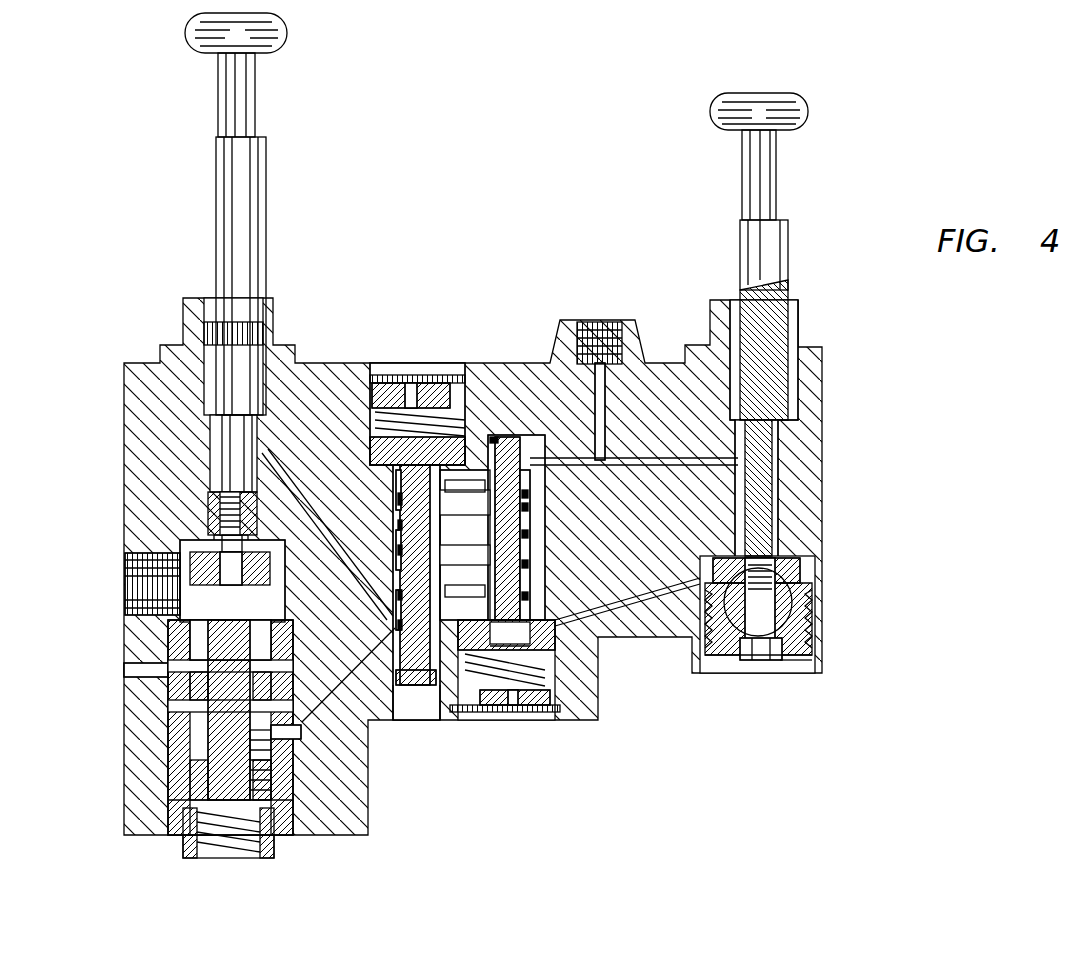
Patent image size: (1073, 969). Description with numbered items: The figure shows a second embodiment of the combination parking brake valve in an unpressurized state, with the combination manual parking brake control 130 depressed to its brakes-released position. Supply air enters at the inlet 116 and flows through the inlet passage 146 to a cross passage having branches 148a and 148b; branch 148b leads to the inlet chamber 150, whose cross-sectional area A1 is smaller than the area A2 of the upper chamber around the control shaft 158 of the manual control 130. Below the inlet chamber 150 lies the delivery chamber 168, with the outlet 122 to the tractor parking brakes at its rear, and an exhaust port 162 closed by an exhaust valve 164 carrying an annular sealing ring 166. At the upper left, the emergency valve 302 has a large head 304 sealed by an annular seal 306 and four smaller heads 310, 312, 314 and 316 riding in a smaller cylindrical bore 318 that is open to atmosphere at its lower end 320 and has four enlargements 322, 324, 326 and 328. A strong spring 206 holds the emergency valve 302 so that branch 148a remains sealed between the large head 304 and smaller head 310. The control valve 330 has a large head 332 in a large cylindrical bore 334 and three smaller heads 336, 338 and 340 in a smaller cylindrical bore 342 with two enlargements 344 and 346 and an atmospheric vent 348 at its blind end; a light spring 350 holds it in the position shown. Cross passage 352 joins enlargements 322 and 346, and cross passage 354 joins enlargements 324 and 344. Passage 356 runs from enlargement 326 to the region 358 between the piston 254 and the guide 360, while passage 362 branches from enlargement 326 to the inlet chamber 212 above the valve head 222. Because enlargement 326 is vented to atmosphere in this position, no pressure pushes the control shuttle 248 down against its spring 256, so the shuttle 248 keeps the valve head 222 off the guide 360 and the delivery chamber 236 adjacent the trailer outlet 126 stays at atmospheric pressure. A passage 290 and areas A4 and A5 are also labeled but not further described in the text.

The inlet 116 is at (600, 325).
The outlet 122 is at (770, 592).
The outlet 126 is at (124, 562).
The combination manual parking brake control 130 is at (812, 325).
The inlet passage 146 is at (607, 388).
The branch 148a is at (645, 465).
The branch 148b is at (650, 458).
The inlet chamber 150 is at (780, 500).
The control shaft 158 is at (776, 300).
The exhaust port 162 is at (790, 665).
The exhaust valve 164 is at (748, 665).
The annular sealing ring 166 is at (795, 660).
The delivery chamber 168 is at (795, 565).
The strong spring 206 is at (370, 403).
The inlet chamber 212 is at (214, 440).
The valve head 222 is at (205, 538).
The delivery chamber 236 is at (252, 611).
The control shuttle 248 is at (250, 754).
The piston 254 is at (275, 745).
The spring 256 is at (182, 855).
The passage 290 is at (645, 590).
The emergency valve 302 is at (330, 466).
The large head 304 is at (443, 462).
The annular seal 306 is at (462, 436).
The smaller head 310 is at (400, 480).
The smaller head 312 is at (397, 550).
The smaller head 314 is at (397, 600).
The smaller head 316 is at (397, 680).
The smaller cylindrical bore 318 is at (397, 525).
The lower end 320 is at (412, 722).
The enlargement 322 is at (397, 500).
The enlargement 324 is at (465, 545).
The enlargement 326 is at (397, 628).
The enlargement 328 is at (440, 722).
The control valve 330 is at (570, 630).
The large head 332 is at (528, 643).
The large cylindrical bore 334 is at (553, 705).
The smaller head 336 is at (530, 594).
The smaller head 338 is at (530, 505).
The smaller head 340 is at (525, 447).
The smaller cylindrical bore 342 is at (530, 533).
The enlargement 344 is at (530, 562).
The enlargement 346 is at (530, 490).
The atmospheric vent 348 is at (505, 440).
The light spring 350 is at (550, 668).
The cross passage 352 is at (468, 518).
The cross passage 354 is at (468, 572).
The passage 356 is at (335, 688).
The region 358 is at (280, 725).
The guide 360 is at (175, 680).
The passage 362 is at (300, 490).
The cross-sectional area A1 is at (206, 395).
The cross-sectional area A2 is at (208, 504).
The port A4 is at (185, 782).
The port A5 is at (194, 696).